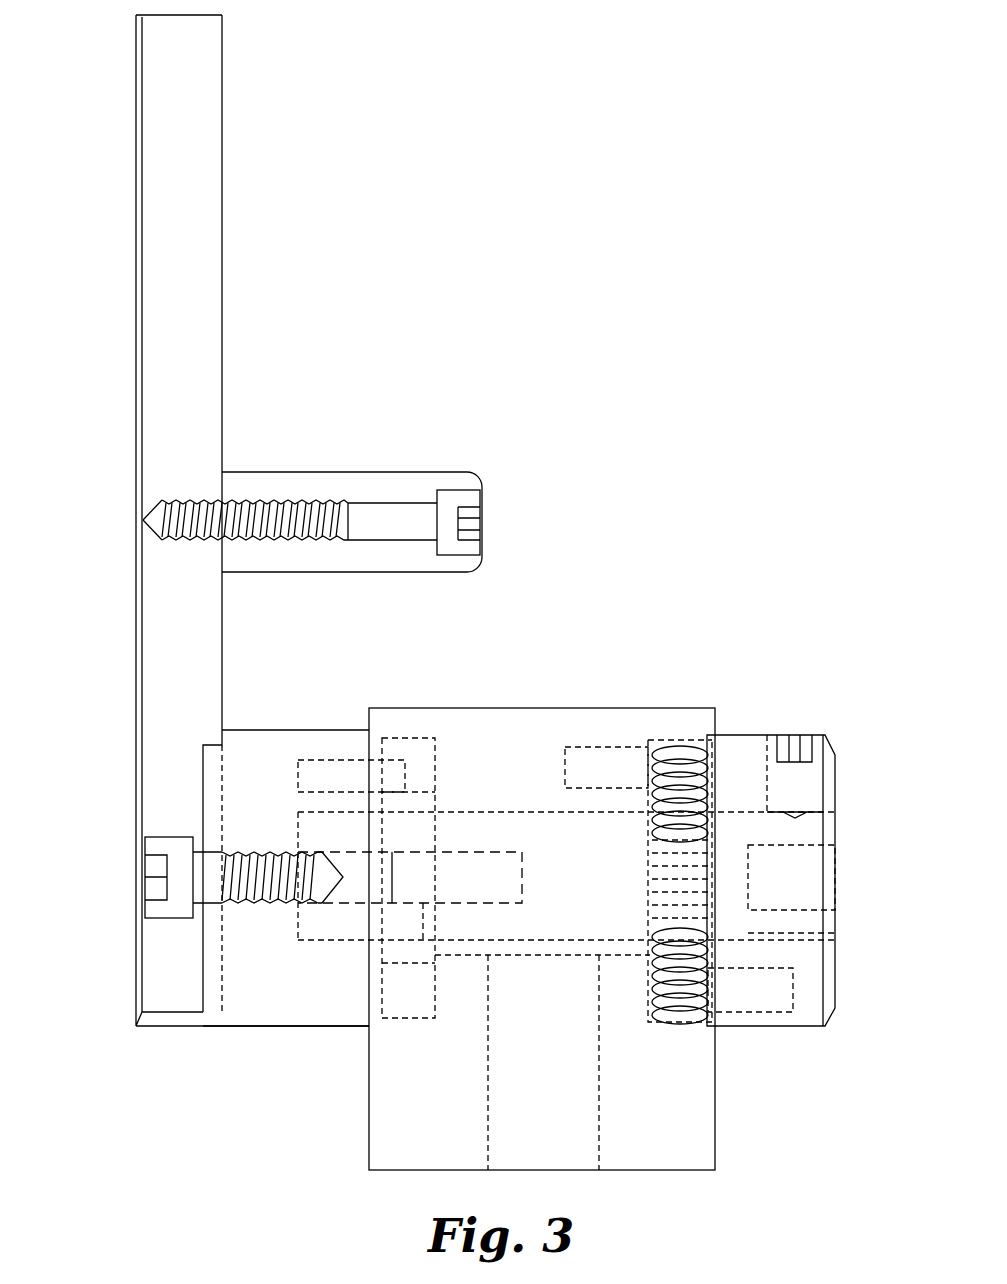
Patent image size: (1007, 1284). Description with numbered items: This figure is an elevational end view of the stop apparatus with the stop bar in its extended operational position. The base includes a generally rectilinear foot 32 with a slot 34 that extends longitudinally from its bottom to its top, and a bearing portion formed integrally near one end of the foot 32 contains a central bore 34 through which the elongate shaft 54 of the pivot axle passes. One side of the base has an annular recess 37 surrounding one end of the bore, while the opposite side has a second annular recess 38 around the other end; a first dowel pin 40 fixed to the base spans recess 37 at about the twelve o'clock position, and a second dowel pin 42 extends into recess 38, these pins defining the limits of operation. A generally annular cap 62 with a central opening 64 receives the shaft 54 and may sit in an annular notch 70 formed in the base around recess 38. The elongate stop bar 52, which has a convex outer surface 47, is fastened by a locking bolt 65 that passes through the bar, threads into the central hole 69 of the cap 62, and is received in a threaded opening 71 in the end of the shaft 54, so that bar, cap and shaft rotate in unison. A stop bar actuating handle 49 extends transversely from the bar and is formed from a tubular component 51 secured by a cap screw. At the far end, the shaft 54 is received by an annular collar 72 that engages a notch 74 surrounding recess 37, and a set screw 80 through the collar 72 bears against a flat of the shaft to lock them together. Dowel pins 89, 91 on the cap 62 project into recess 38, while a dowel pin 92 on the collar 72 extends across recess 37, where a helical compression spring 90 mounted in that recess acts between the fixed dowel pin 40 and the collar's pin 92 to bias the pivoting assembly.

The foot 32 is at (583, 708).
The slot 34 is at (528, 815).
The annular recess 37 is at (660, 1028).
The second annular recess 38 is at (410, 738).
The first dowel pin 40 is at (620, 740).
The second dowel pin 42 is at (522, 878).
The convex outer surface 47 is at (134, 148).
The stop bar actuating handle 49 is at (392, 472).
The tubular component 51 is at (273, 472).
The stop bar 52 is at (222, 215).
The shaft 54 is at (472, 827).
The cap 62 is at (318, 730).
The central opening 64 is at (312, 812).
The locking bolt 65 is at (178, 908).
The central hole 69 is at (253, 907).
The annular notch 70 is at (382, 1025).
The threaded opening 71 is at (343, 852).
The annular collar 72 is at (843, 762).
The notch 74 is at (718, 735).
The set screw 80 is at (805, 735).
The dowel pin 89 is at (347, 760).
The helical compression spring 90 is at (688, 740).
The dowel pin 91 is at (330, 940).
The dowel pin 92 is at (793, 990).